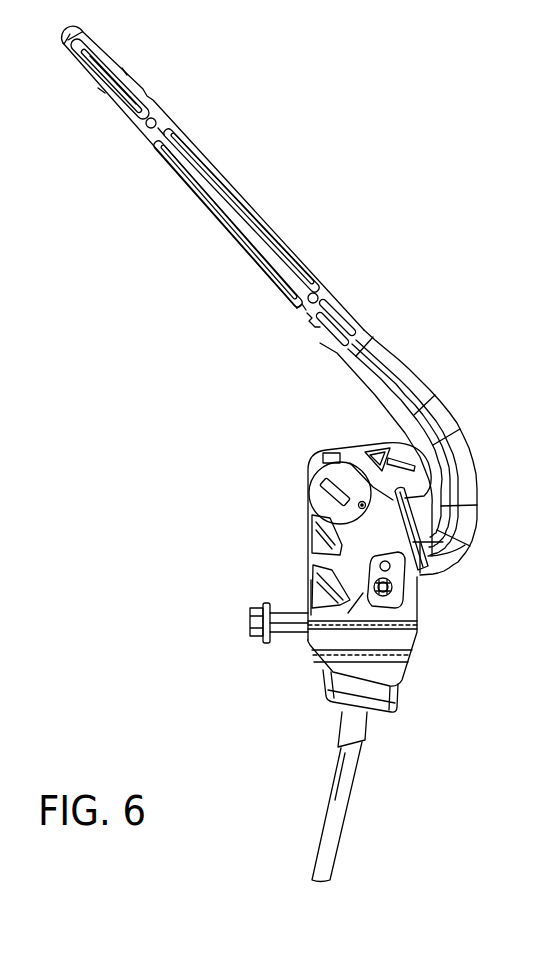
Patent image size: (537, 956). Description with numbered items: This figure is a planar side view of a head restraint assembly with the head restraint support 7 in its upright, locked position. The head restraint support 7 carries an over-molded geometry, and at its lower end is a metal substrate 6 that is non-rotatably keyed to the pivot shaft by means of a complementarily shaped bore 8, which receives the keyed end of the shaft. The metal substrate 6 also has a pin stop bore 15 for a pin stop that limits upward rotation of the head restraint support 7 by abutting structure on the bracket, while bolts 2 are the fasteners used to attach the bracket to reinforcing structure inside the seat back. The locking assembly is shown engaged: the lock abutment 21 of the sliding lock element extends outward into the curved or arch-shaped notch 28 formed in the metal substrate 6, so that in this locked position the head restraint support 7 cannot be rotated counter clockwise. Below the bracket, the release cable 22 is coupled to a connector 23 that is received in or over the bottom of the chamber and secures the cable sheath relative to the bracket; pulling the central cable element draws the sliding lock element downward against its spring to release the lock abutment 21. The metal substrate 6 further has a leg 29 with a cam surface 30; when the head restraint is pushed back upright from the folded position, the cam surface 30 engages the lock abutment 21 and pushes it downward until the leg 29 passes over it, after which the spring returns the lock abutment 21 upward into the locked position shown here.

The bolt 2 is at (253, 633).
The metal substrate 6 is at (350, 473).
The head restraint support 7 is at (307, 243).
The bore 8 is at (323, 482).
The pin stop bore 15 is at (357, 506).
The lock abutment 21 is at (403, 586).
The release cable 22 is at (352, 783).
The connector 23 is at (400, 710).
The notch 28 is at (412, 572).
The leg 29 is at (345, 572).
The cam surface 30 is at (333, 570).